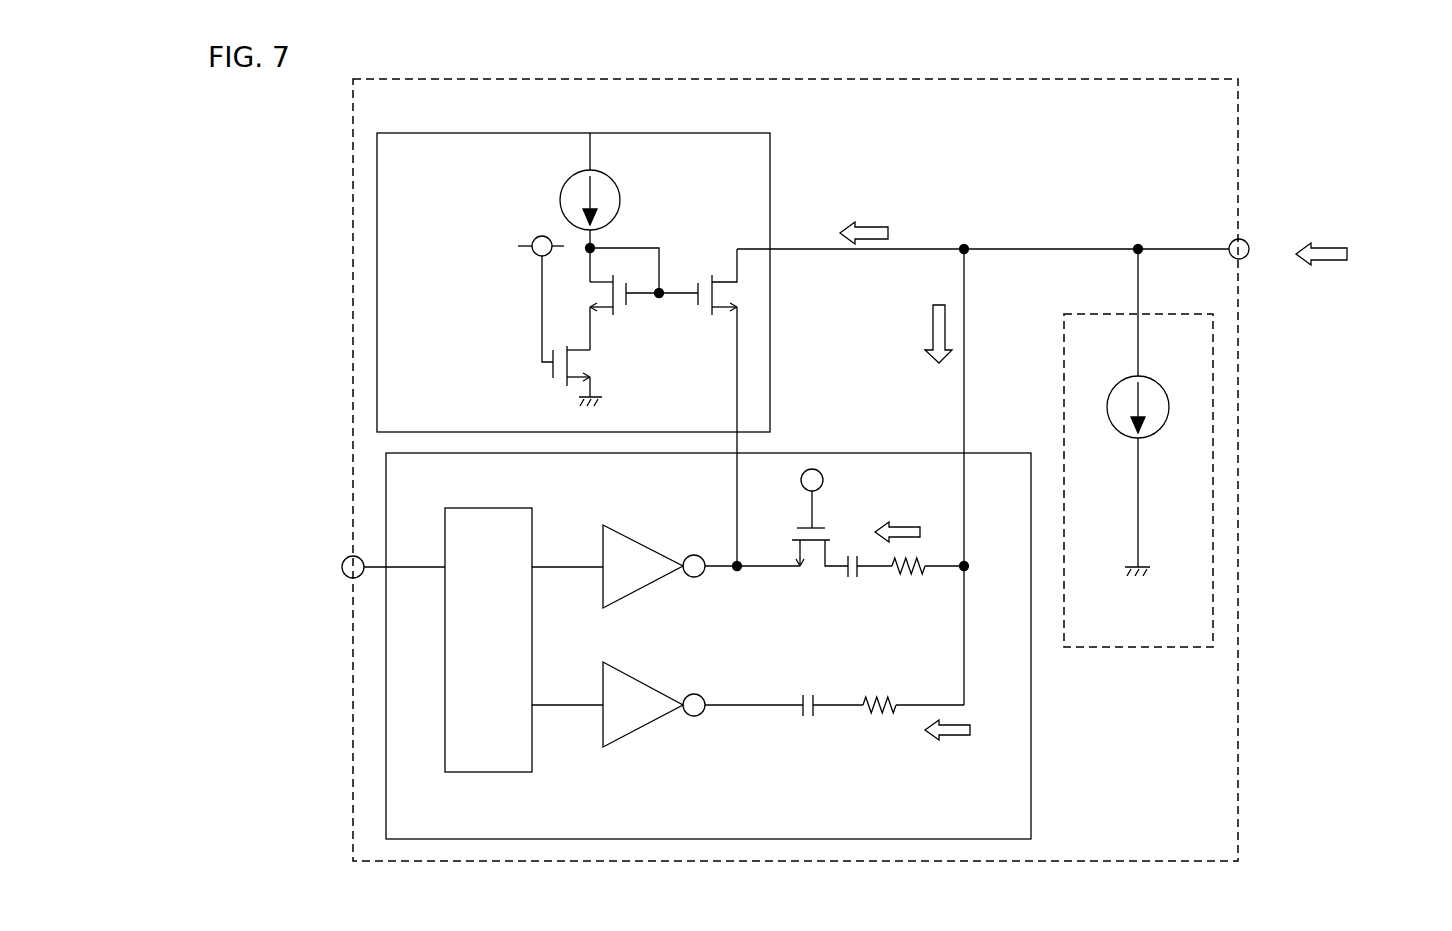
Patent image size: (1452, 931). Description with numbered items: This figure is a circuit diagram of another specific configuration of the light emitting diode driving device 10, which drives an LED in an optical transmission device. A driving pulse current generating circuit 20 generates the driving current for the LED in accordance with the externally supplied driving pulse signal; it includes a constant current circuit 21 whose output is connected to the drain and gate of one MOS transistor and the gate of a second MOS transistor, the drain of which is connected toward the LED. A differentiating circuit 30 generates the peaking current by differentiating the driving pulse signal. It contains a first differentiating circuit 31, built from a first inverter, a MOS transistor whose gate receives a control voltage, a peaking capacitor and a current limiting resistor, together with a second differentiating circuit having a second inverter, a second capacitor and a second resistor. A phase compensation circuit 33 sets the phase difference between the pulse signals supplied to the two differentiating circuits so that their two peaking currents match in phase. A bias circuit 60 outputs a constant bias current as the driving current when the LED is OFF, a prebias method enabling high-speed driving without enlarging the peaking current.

The light emitting diode driving device 10 is at (1085, 78).
The driving pulse current generating circuit 20 is at (770, 141).
The constant current circuit 21 is at (653, 210).
The differentiating circuit 30 is at (1033, 708).
The first differentiating circuit 31 is at (750, 757).
The phase compensation circuit 33 is at (487, 509).
The bias circuit 60 is at (1064, 336).